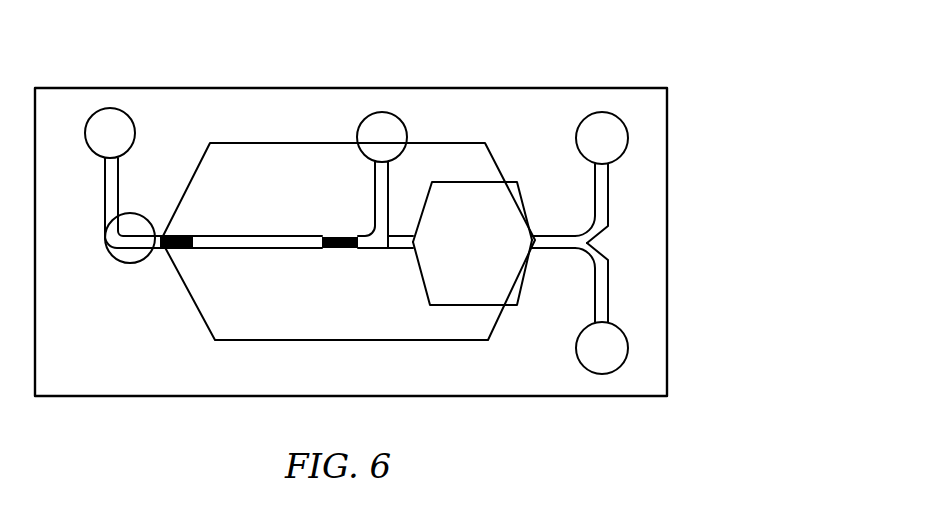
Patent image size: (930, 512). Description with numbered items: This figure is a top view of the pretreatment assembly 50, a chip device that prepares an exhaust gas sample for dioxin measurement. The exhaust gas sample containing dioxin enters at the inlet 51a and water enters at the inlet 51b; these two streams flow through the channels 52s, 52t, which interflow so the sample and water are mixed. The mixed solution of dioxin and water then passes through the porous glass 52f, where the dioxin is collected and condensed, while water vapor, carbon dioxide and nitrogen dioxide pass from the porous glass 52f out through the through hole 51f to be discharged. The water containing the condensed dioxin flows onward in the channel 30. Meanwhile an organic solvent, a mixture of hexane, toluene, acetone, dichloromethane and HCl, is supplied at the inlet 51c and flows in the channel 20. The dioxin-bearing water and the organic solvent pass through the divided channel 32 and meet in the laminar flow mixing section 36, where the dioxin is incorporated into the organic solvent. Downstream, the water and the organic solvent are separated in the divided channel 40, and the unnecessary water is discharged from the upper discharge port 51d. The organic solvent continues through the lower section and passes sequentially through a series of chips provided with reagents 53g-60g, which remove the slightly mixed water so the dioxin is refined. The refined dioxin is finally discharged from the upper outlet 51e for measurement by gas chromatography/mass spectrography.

The pretreatment assembly 50 is at (603, 75).
The inlet 51a is at (613, 130).
The inlet 51b is at (618, 342).
The inlet 51c is at (381, 132).
The discharge port 51d is at (118, 253).
The discharge port 51e is at (127, 128).
The through hole 51f is at (420, 285).
The porous glass 52f is at (467, 205).
The channel 52s is at (609, 192).
The channel 52t is at (609, 298).
The channel 20 is at (377, 196).
The channel 30 is at (393, 243).
The divided channel 32 is at (333, 249).
The laminar flow mixing section 36 is at (257, 249).
The divided channel 40 is at (172, 237).
The reagents 53g-60g is at (372, 341).